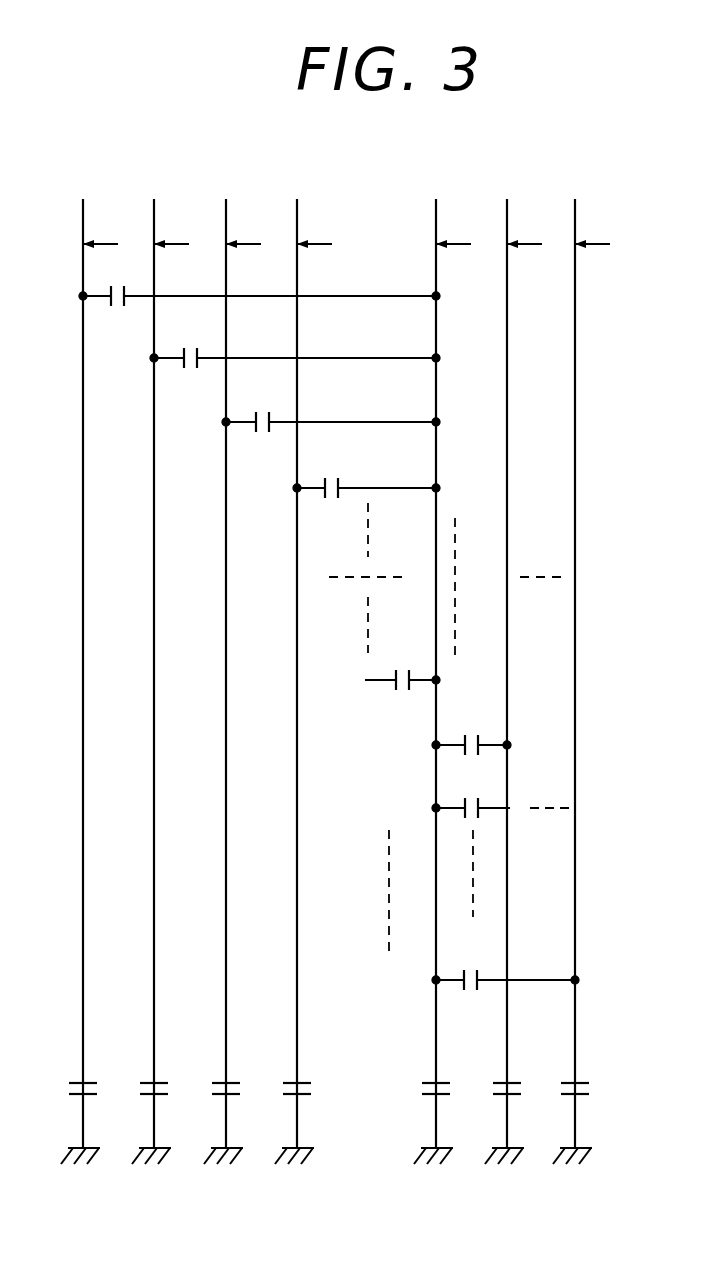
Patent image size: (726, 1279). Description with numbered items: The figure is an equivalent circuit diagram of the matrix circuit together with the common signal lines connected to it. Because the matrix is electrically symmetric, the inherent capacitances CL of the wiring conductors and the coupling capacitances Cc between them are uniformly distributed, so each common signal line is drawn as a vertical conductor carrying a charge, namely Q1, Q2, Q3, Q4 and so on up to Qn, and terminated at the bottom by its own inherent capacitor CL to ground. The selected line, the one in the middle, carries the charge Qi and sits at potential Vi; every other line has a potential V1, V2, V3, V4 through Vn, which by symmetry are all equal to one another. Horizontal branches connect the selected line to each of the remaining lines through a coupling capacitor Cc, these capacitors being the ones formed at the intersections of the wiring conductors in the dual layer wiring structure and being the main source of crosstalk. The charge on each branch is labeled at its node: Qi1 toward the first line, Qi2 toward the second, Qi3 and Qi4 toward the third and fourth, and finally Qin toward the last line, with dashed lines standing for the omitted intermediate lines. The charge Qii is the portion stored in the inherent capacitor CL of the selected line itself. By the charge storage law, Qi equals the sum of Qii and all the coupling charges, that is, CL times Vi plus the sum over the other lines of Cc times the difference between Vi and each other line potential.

The charge of common signal line 1 Q1 is at (77, 659).
The charge of common signal line 2 Q2 is at (152, 659).
The charge of common signal line 3 Q3 is at (222, 659).
The charge of common signal line 4 Q4 is at (293, 659).
The charge accumulated in common signal line i Qi is at (431, 659).
The charge of common signal line n Qn is at (572, 659).
The potential of common signal line 1 V1 is at (100, 232).
The potential of common signal line 2 V2 is at (171, 232).
The potential of common signal line 3 V3 is at (243, 232).
The potential of common signal line 4 V4 is at (314, 232).
The potential of common signal line i Vi is at (453, 232).
The potential of common signal line n Vn is at (592, 232).
The charge in coupling capacitor between lines i and 1 Qi1 is at (281, 296).
The charge in coupling capacitor between lines i and 2 Qi2 is at (316, 358).
The charge in coupling capacitor between lines i and 3 Qi3 is at (352, 422).
The charge in coupling capacitor between lines i and 4 Qi4 is at (388, 488).
The charge in coupling capacitor between lines i and n Qin is at (486, 980).
The charge in inherent capacitor of line i Qii is at (404, 1060).
The coupling capacitor Cc is at (290, 624).
The inherent capacitor CL is at (314, 1092).